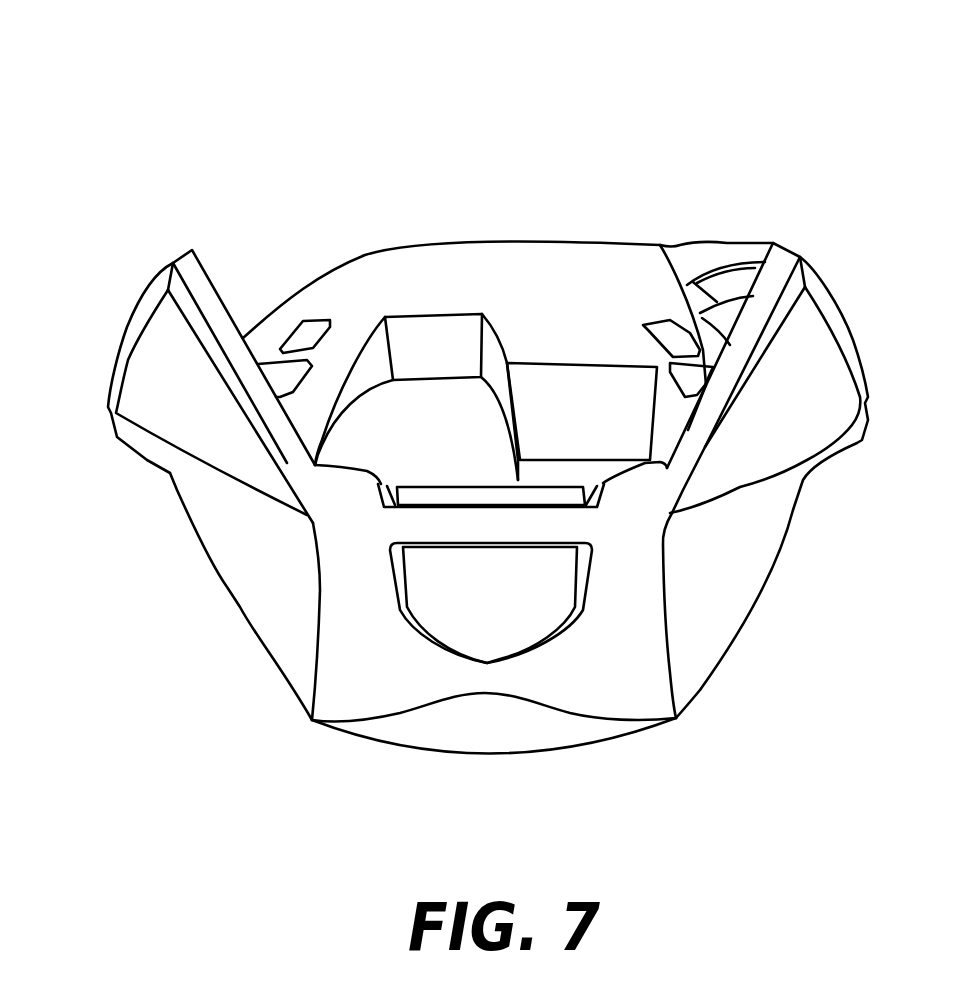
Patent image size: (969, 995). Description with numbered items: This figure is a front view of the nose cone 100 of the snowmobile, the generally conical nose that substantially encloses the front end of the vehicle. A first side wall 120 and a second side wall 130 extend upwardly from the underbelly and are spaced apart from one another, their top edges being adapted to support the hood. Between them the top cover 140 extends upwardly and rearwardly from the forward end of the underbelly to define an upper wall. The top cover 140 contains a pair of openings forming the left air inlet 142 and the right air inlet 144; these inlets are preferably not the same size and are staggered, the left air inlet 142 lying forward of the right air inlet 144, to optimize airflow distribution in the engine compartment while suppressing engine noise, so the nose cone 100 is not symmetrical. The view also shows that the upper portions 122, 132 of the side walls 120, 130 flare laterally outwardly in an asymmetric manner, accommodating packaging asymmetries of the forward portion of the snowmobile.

The nose cone 100 is at (582, 138).
The first side wall 120 is at (713, 620).
The upper portion of first side wall 122 is at (758, 460).
The second side wall 130 is at (253, 612).
The upper portion of second side wall 132 is at (147, 367).
The top cover 140 is at (388, 268).
The left air inlet 142 is at (611, 431).
The right air inlet 144 is at (461, 361).